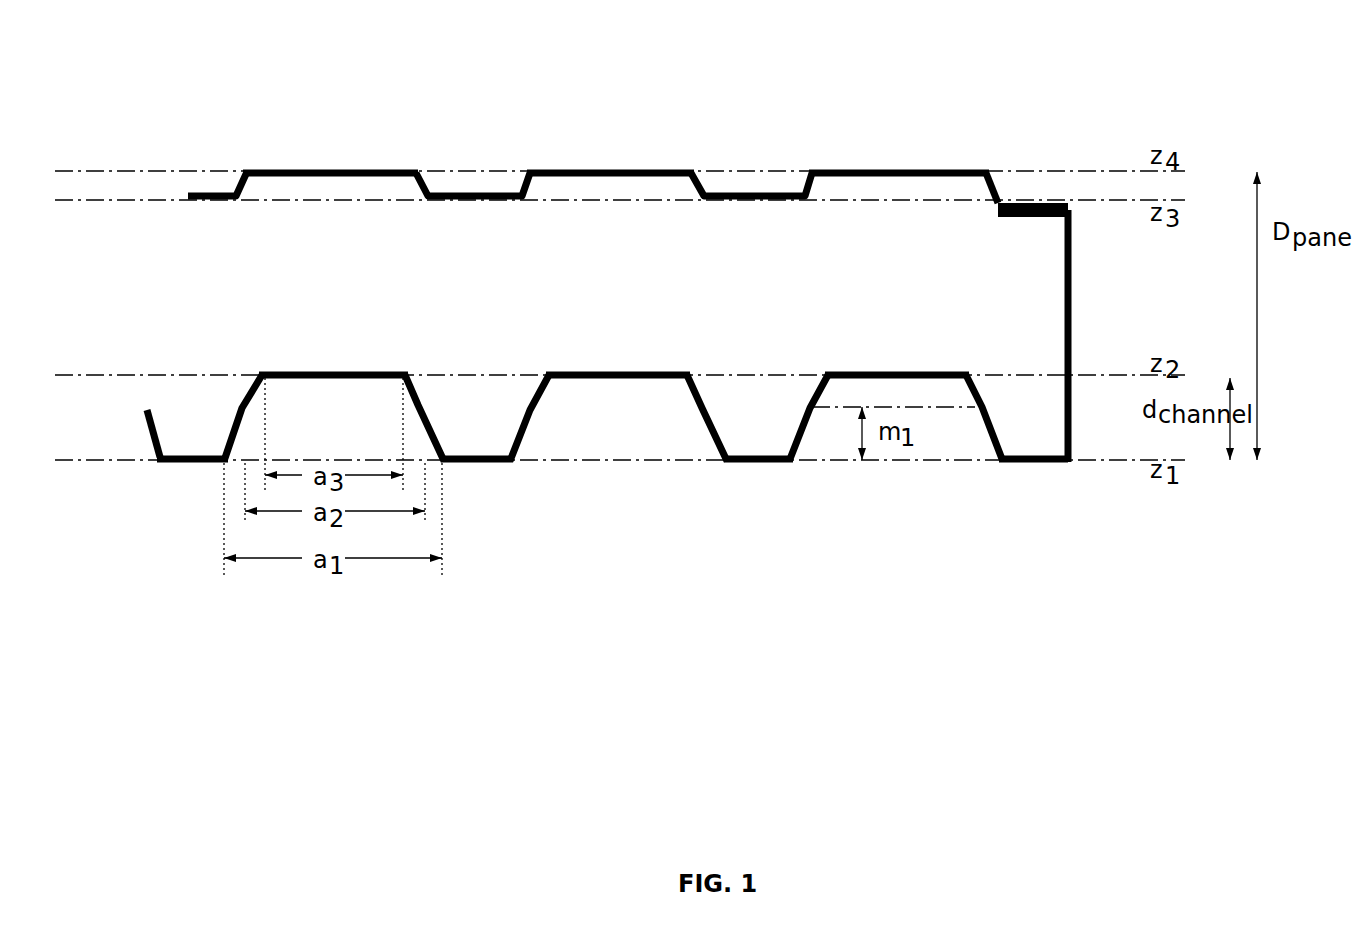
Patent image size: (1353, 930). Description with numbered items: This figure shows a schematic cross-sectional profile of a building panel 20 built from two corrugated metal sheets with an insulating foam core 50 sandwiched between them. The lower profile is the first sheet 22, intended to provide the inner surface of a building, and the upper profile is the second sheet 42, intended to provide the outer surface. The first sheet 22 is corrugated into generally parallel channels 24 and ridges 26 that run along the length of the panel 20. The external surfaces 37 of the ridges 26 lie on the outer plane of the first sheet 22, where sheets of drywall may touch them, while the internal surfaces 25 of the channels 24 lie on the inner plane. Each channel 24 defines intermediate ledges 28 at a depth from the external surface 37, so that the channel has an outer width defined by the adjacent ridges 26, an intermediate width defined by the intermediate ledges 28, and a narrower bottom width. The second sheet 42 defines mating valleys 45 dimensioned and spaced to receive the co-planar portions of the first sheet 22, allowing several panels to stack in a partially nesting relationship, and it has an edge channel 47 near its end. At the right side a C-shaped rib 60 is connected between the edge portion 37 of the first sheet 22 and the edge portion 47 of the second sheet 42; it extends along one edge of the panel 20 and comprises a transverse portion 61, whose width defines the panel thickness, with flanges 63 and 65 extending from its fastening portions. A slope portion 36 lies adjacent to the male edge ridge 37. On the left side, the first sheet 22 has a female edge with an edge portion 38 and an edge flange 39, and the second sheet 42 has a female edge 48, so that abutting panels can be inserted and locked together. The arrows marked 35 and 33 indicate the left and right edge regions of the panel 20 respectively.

The building panel 20 is at (983, 98).
The first sheet 22 is at (146, 451).
The channels 24 is at (727, 508).
The internal surfaces 25 is at (345, 372).
The ridges 26 is at (458, 457).
The intermediate ledges 28 is at (530, 410).
The second edge portion 33 is at (1062, 565).
The first channel portion 35 is at (181, 552).
The slope portion 36 is at (996, 449).
The external surfaces 37 is at (787, 508).
The edge portion 38 is at (176, 462).
The edge flange 39 is at (146, 413).
The second sheet 42 is at (272, 158).
The mating valleys 45 is at (460, 193).
The edge channel 47 is at (1007, 203).
The female edge 48 is at (212, 197).
The insulating foam core 50 is at (338, 240).
The C-shaped rib 60 is at (1077, 313).
The transverse portion 61 is at (1092, 336).
The flange 63 is at (1012, 446).
The flange 65 is at (1000, 222).